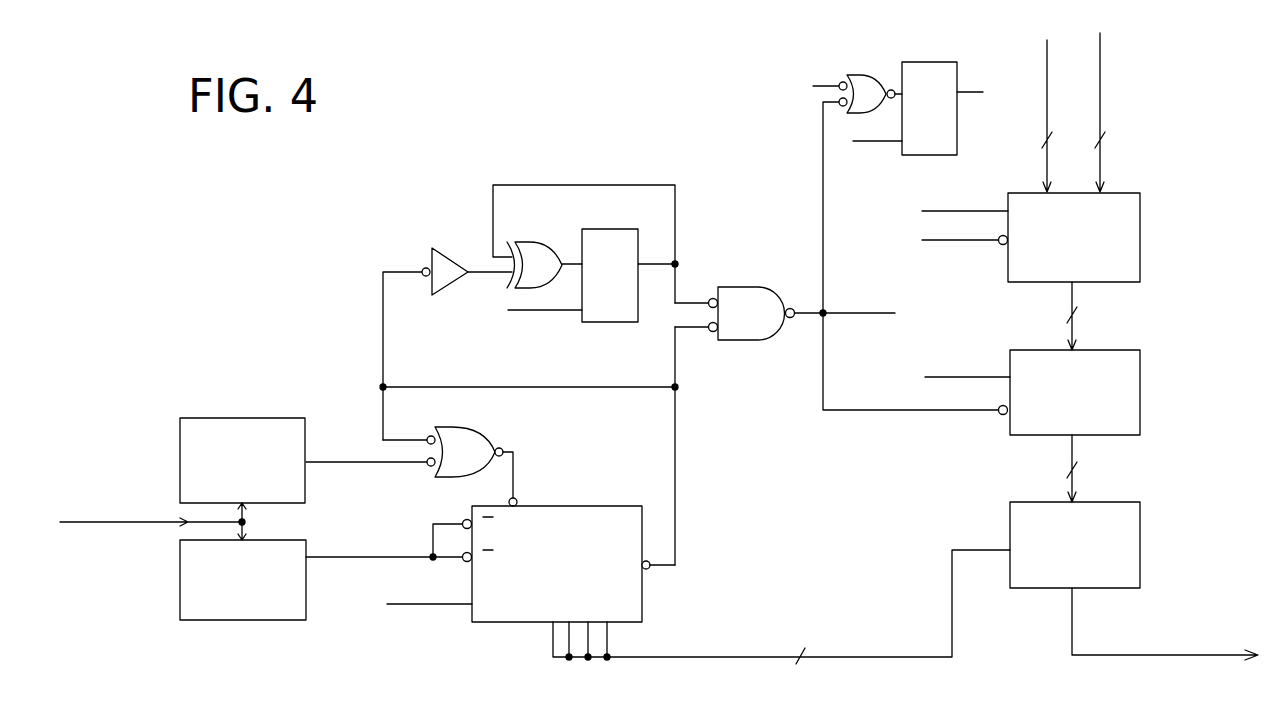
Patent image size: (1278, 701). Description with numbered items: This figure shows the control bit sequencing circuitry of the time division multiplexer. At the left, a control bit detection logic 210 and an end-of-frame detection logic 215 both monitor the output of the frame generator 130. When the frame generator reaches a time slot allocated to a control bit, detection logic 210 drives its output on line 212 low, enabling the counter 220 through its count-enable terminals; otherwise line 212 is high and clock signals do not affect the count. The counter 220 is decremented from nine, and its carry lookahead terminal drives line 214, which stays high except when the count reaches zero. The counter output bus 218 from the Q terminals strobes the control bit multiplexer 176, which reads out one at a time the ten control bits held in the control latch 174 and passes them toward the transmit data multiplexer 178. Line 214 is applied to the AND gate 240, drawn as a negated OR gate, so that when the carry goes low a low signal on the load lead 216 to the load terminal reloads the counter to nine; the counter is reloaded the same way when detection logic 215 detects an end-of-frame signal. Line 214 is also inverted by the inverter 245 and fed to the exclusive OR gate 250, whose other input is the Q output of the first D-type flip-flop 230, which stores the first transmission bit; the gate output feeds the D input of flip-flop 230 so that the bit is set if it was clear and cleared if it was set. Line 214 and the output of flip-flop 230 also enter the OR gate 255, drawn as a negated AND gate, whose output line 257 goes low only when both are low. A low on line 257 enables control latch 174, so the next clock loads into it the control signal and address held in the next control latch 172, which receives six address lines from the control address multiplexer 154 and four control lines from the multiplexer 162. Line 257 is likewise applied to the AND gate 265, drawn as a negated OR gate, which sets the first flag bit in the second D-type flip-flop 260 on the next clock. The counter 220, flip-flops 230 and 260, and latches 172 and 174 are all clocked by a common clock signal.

The frame generator 130 is at (97, 581).
The control address multiplexer 154 is at (996, 107).
The multiplexer 162 is at (1120, 107).
The next control latch 172 is at (1140, 222).
The control latch 174 is at (1140, 385).
The control bit multiplexer 176 is at (1140, 547).
The transmit data multiplexer 178 is at (1154, 686).
The control bit detection logic 210 is at (297, 539).
The line 212 is at (363, 557).
The line 214 is at (675, 465).
The end-of-frame detection logic 215 is at (290, 417).
The output lines 216 is at (513, 470).
The counter output bus 218 is at (700, 657).
The counter 220 is at (588, 505).
The first D-type flip-flop 230 is at (608, 229).
The AND gate 240 is at (470, 427).
The inverter 245 is at (448, 248).
The exclusive OR gate 250 is at (530, 243).
The OR gate 255 is at (770, 287).
The line 257 is at (860, 313).
The second D-type flip-flop 260 is at (935, 62).
The AND gate 265 is at (866, 75).